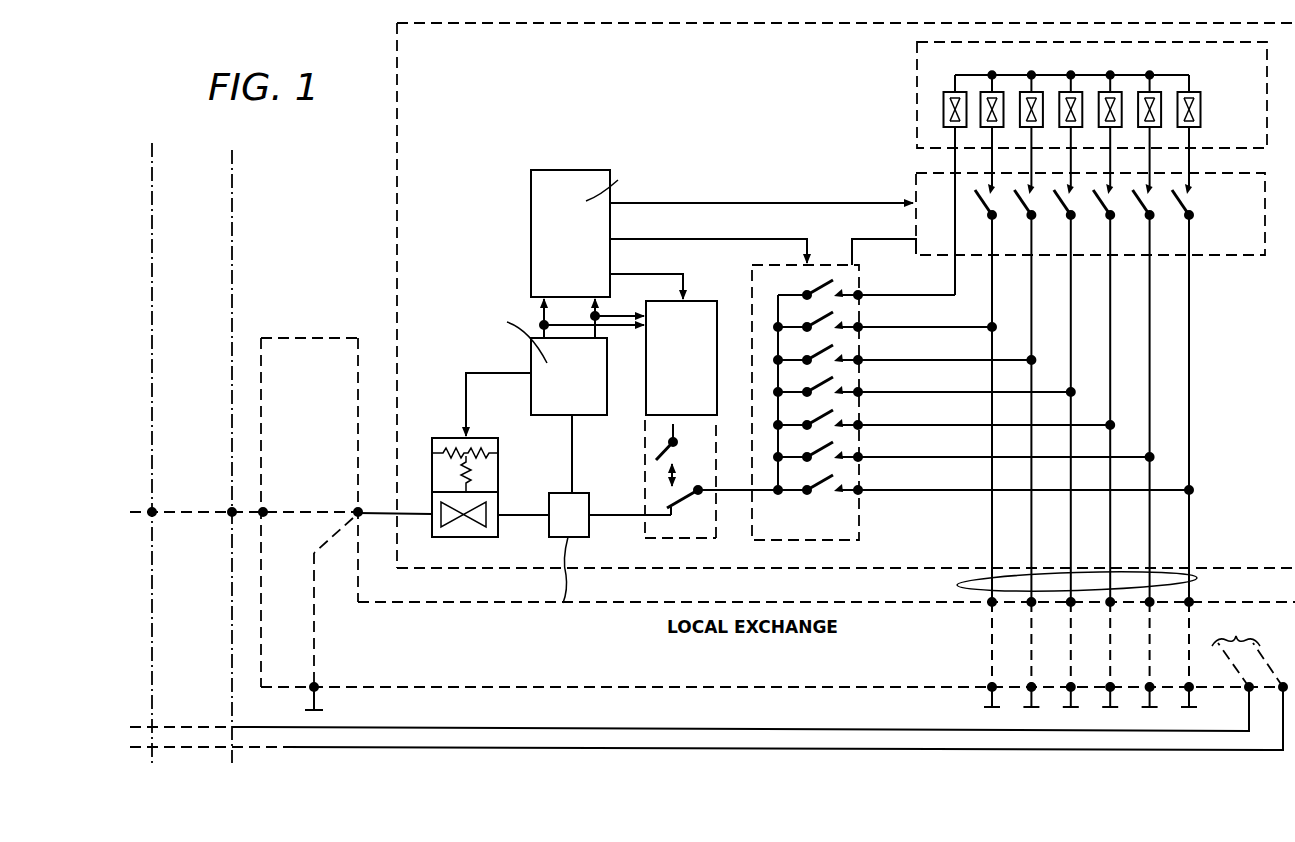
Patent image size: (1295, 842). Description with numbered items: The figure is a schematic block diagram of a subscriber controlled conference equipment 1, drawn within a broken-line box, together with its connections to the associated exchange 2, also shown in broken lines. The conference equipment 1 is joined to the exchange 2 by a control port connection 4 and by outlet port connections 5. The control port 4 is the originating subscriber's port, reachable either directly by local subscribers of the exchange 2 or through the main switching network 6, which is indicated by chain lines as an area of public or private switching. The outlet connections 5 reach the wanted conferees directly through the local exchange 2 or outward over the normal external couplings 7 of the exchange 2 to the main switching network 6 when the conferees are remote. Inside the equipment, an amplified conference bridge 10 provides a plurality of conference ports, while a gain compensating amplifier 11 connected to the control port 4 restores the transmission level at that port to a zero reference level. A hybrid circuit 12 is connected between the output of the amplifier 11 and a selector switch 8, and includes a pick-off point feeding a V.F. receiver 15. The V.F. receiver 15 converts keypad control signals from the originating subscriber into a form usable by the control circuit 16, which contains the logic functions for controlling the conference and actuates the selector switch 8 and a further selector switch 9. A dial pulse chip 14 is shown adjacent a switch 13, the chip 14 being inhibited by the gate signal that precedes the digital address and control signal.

The subscriber controlled conference equipment 1 is at (394, 181).
The exchange 2 is at (314, 337).
The control port connection 4 is at (381, 516).
The outlet port connections 5 is at (1197, 579).
The main switching network 6 is at (229, 569).
The external couplings 7 is at (907, 750).
The selector switch 8 is at (859, 505).
The further selector switch 9 is at (1235, 255).
The amplified conference bridge 10 is at (911, 97).
The gain compensating amplifier 11 is at (470, 541).
The hybrid circuit 12 is at (542, 532).
The dial pulse switch 13 is at (688, 545).
The dial pulse chip 14 is at (709, 296).
The V.F. receiver 15 is at (545, 422).
The control circuit 16 is at (529, 222).